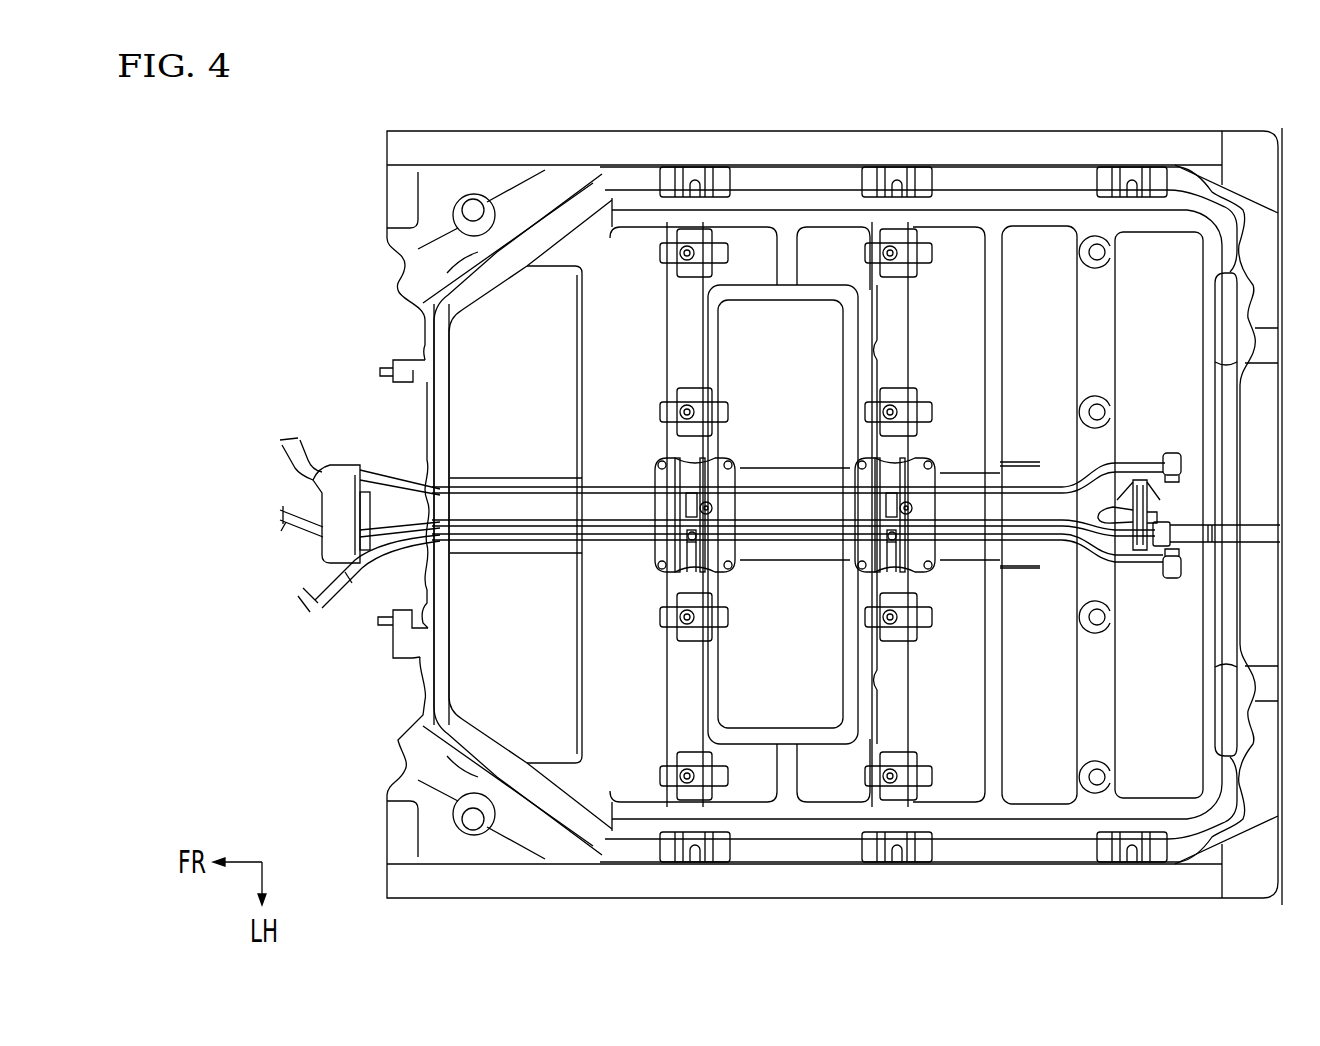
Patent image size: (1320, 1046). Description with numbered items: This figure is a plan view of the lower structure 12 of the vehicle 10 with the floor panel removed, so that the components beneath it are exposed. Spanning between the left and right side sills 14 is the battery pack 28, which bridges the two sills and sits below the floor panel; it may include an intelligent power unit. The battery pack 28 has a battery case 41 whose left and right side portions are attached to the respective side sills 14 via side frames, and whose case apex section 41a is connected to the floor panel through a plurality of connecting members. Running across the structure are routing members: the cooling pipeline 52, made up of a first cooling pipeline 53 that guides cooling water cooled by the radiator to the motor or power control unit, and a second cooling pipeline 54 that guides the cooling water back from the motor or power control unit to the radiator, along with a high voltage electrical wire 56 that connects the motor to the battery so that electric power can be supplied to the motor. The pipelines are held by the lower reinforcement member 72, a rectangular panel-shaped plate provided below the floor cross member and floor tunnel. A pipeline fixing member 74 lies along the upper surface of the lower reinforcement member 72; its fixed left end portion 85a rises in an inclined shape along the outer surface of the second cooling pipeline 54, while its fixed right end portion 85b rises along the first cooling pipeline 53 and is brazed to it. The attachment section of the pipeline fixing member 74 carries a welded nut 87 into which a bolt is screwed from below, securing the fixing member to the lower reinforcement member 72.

The vehicle 10 is at (362, 177).
The lower structure 12 is at (517, 131).
The side sills 14 is at (712, 146).
The battery pack 28 is at (806, 190).
The battery case 41 is at (765, 702).
The case apex section 41a is at (933, 700).
The cooling pipeline 52 is at (1090, 80).
The first cooling pipeline 53 is at (1014, 485).
The second cooling pipeline 54 is at (1053, 547).
The high voltage electrical wire 56 is at (1018, 523).
The lower reinforcement member 72 is at (670, 478).
The pipeline fixing member 74 is at (660, 505).
The fixed left end portion 85a is at (688, 556).
The fixed right end portion 85b is at (686, 472).
The nut 87 is at (710, 504).